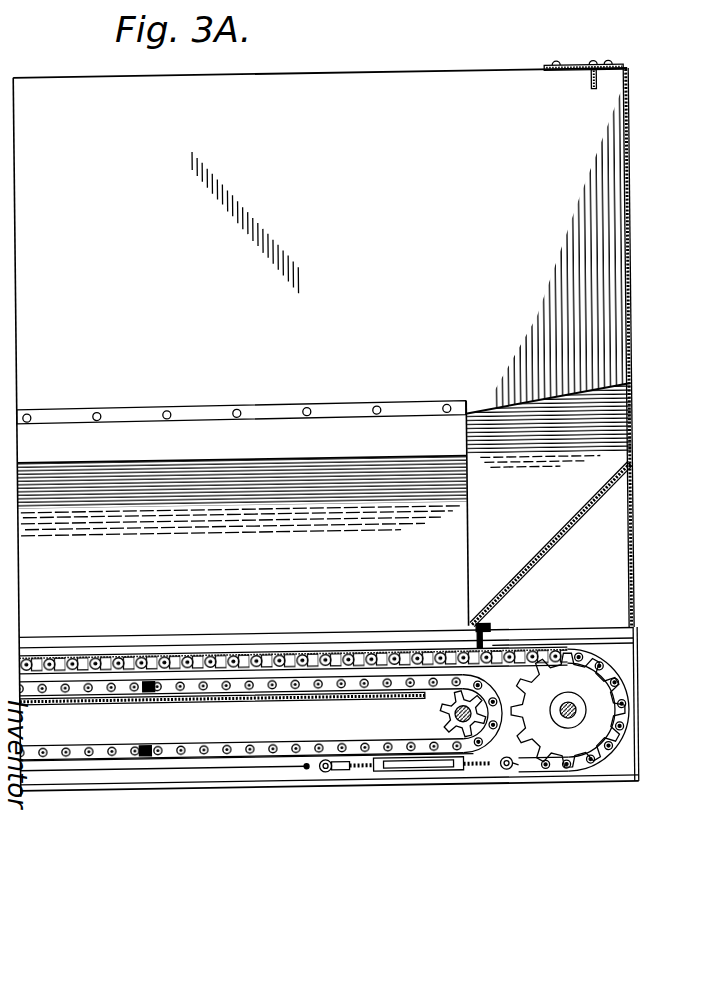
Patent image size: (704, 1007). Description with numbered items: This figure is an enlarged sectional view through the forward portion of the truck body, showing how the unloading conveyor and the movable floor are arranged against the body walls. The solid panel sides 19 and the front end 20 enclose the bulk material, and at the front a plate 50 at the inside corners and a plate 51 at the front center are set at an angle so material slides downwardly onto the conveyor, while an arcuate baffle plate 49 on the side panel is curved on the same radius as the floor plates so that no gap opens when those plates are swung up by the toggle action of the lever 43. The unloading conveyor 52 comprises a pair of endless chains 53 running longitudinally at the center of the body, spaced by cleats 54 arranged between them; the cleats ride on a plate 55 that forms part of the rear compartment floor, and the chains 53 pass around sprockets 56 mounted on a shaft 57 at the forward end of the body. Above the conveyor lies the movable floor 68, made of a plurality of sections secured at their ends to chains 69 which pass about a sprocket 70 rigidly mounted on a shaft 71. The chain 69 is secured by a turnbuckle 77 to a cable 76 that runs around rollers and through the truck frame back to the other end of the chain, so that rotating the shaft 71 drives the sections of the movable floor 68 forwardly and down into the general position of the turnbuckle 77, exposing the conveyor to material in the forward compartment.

The solid panel sides 19 is at (412, 141).
The front end 20 is at (634, 195).
The lever 43 is at (693, 615).
The arcuate baffle plate 49 is at (196, 591).
The plate 50 is at (506, 555).
The plate 51 is at (505, 576).
The unloading conveyor 52 is at (272, 699).
The endless chains 53 is at (188, 743).
The cleats 54 is at (149, 692).
The plate 55 is at (110, 700).
The sprockets 56 is at (437, 720).
The shaft 57 is at (442, 710).
The movable floor 68 is at (270, 651).
The chains 69 is at (573, 658).
The sprocket 70 is at (571, 696).
The shaft 71 is at (572, 716).
The cable 76 is at (272, 771).
The turnbuckle 77 is at (457, 774).